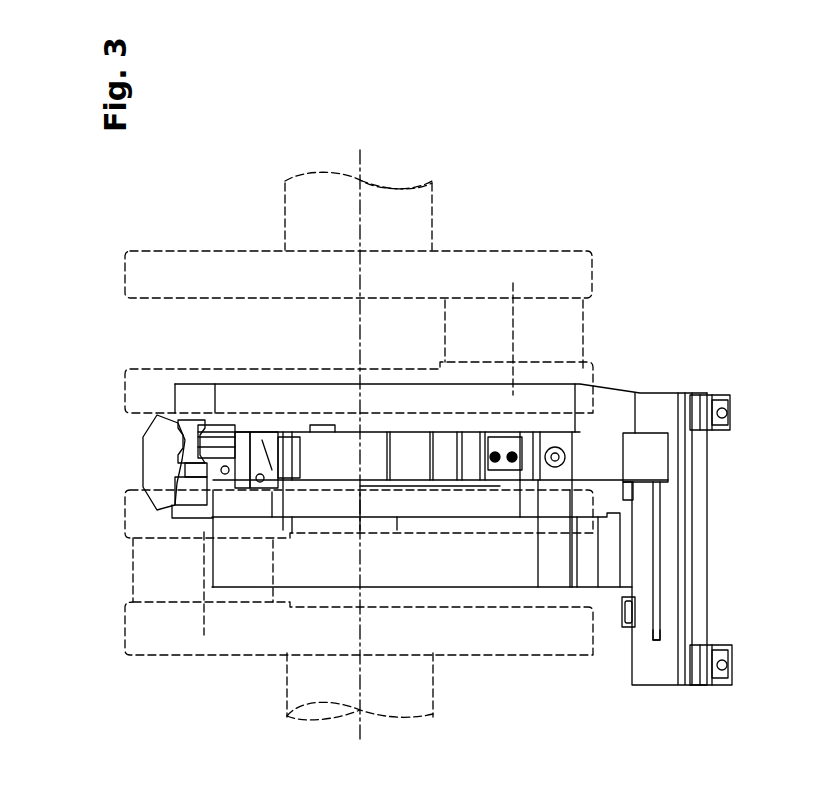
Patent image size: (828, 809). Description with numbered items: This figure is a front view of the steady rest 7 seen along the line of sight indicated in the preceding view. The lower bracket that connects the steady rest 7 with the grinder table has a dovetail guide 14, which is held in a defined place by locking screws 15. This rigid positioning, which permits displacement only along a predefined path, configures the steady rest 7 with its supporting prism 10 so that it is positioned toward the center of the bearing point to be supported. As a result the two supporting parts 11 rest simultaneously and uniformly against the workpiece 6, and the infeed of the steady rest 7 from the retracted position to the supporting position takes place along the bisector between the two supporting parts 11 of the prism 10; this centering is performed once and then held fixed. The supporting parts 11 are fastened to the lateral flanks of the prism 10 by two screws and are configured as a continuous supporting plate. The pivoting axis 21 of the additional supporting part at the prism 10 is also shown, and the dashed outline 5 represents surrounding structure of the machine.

The rotor 5 is at (513, 283).
The workpiece 6 is at (285, 182).
The steady rest 7 is at (635, 458).
The supporting prism 10 is at (532, 468).
The supporting parts 11 is at (505, 442).
The dovetail guide 14 is at (654, 646).
The locking screws 15 is at (623, 627).
The pivoting axis 21 is at (565, 457).